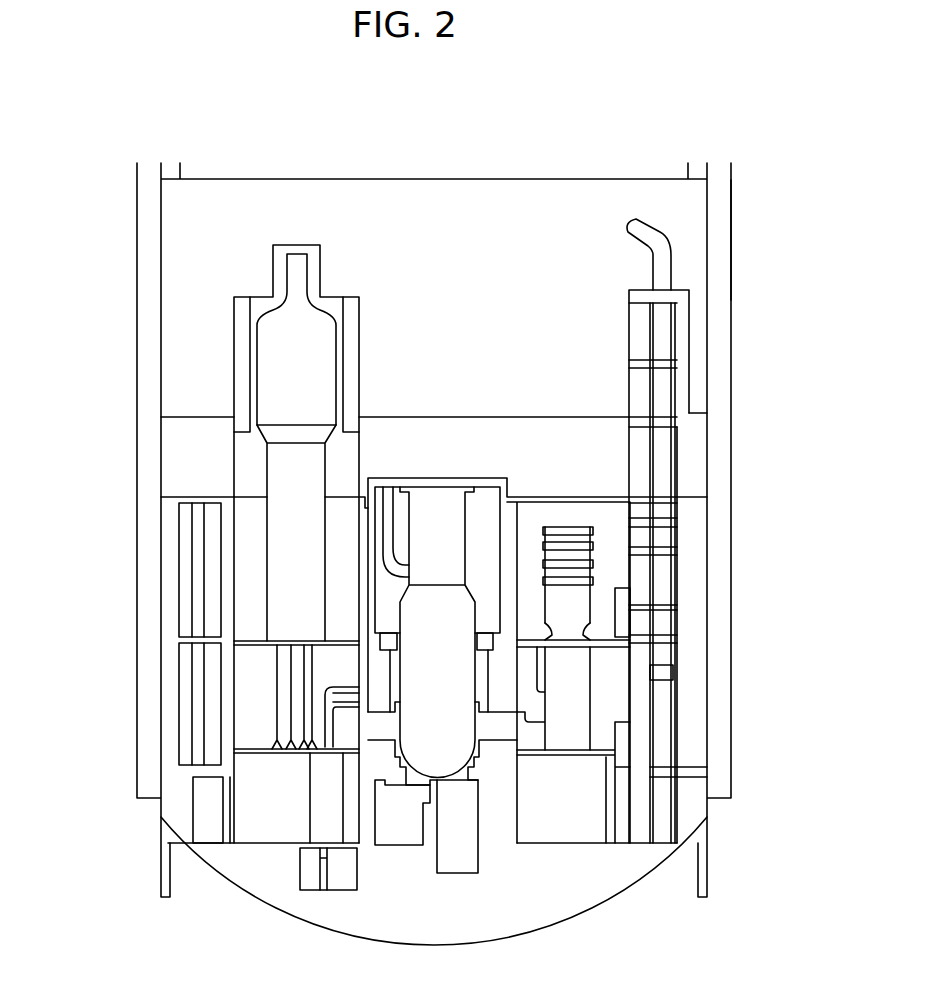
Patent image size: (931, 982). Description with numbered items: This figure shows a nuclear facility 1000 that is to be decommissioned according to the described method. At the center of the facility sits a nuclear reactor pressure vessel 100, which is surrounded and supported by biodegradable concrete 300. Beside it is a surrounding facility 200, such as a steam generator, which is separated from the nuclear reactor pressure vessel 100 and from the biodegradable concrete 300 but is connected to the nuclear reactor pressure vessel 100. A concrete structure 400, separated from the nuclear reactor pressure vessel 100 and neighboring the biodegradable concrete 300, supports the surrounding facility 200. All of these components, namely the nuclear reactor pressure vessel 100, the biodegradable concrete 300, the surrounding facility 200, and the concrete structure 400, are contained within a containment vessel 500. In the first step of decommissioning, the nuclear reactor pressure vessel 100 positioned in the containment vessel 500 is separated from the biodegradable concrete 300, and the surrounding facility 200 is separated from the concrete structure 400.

The nuclear facility 1000 is at (449, 106).
The containment vessel 500 is at (722, 221).
The concrete structure 400 is at (225, 523).
The surrounding facility 200 is at (288, 566).
The nuclear reactor pressure vessel 100 is at (450, 640).
The biodegradable concrete 300 is at (500, 680).